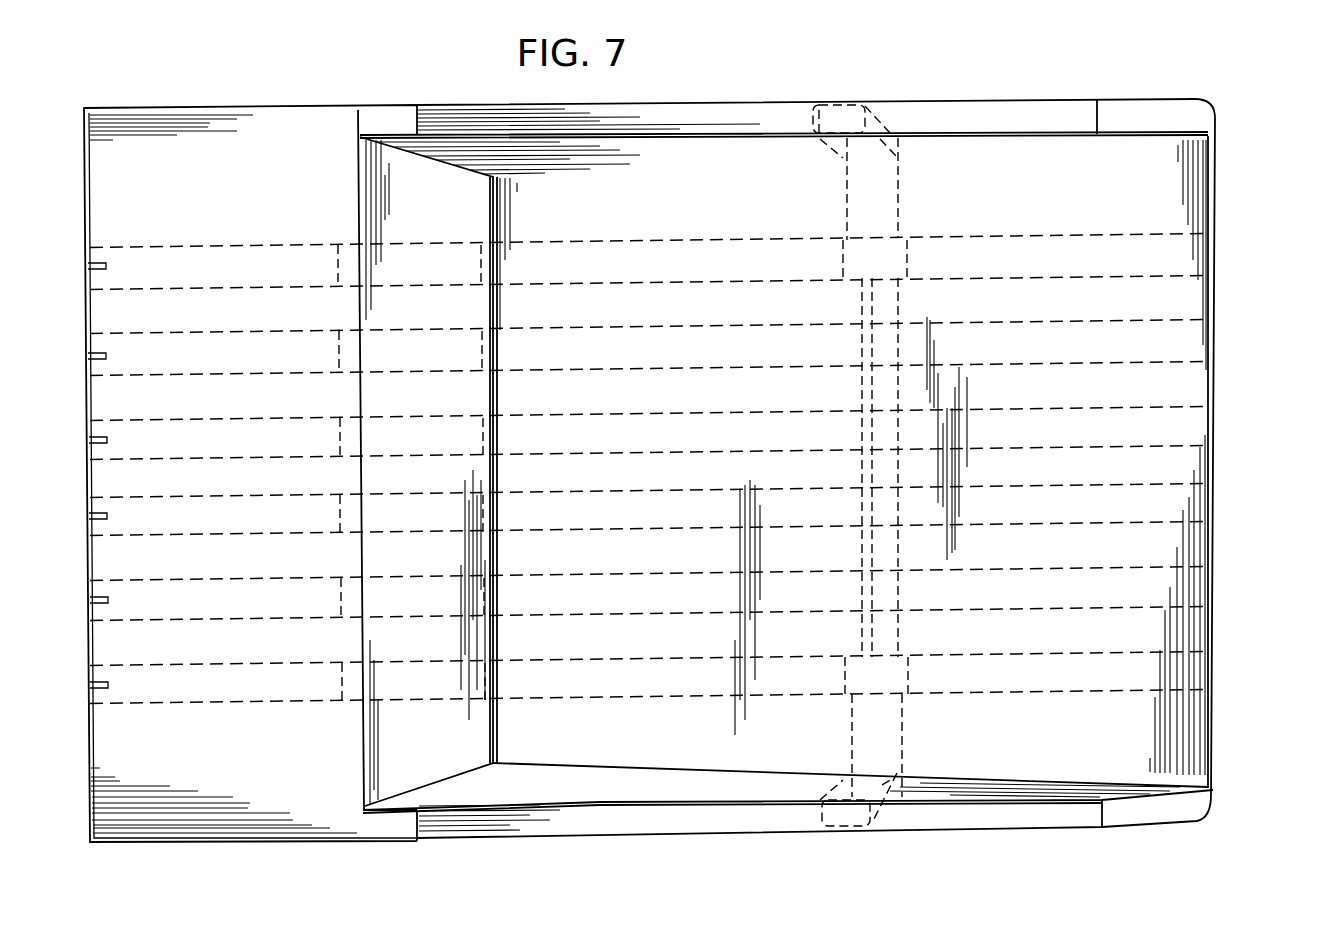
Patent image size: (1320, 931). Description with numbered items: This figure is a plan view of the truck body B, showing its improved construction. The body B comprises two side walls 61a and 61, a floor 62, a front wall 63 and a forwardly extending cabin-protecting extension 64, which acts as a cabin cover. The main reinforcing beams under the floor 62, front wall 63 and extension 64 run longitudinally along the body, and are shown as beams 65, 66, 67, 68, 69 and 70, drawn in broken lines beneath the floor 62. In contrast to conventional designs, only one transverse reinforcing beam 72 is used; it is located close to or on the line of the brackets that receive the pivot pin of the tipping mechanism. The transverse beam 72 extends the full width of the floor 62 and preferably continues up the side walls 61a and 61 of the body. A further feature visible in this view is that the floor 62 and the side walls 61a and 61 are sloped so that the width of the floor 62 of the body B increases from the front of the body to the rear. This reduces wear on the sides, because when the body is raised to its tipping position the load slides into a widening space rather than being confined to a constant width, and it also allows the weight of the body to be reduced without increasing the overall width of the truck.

The side wall 61 is at (735, 157).
The side wall 61a is at (622, 783).
The floor 62 is at (1168, 547).
The front wall 63 is at (356, 187).
The cabin-protecting extension 64 is at (216, 322).
The longitudinal reinforcing beam 65 is at (641, 250).
The longitudinal reinforcing beam 66 is at (645, 345).
The longitudinal reinforcing beam 67 is at (649, 433).
The longitudinal reinforcing beam 68 is at (649, 507).
The longitudinal reinforcing beam 69 is at (651, 590).
The longitudinal reinforcing beam 70 is at (649, 670).
The transverse reinforcing beam 72 is at (883, 160).
The truck body B is at (1225, 192).